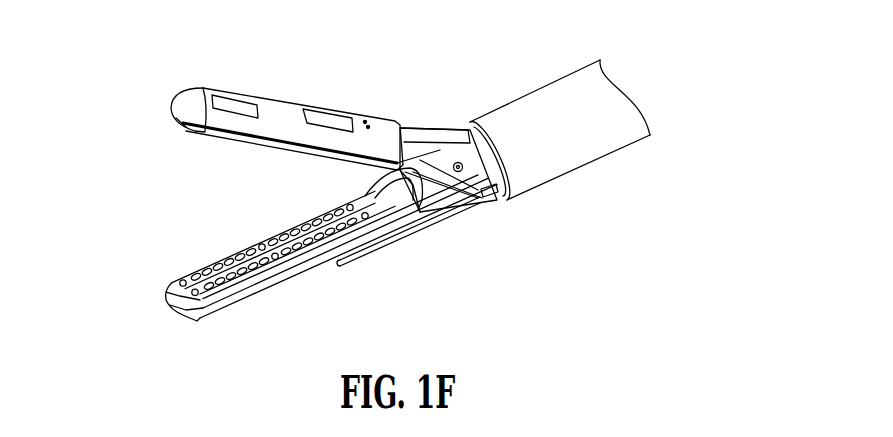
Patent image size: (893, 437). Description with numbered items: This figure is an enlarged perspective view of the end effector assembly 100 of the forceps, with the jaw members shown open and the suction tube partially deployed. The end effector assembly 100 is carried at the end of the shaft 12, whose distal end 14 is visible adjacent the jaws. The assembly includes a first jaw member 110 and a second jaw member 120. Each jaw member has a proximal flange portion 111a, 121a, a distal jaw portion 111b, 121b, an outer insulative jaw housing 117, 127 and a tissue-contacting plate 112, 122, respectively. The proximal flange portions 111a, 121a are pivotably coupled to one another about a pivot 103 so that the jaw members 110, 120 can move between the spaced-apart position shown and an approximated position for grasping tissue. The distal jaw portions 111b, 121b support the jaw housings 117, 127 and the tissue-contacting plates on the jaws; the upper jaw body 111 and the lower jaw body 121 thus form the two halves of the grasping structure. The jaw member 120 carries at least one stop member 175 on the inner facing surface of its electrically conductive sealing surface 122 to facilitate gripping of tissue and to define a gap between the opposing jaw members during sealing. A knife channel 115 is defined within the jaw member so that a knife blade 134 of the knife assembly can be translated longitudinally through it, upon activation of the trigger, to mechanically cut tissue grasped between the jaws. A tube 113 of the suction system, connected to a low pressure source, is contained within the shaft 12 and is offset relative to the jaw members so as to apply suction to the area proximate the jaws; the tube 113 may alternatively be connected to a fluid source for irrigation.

The end effector assembly 100 is at (398, 38).
The shaft 12 is at (583, 77).
The distal end of shaft 14 is at (498, 118).
The pivot 103 is at (487, 197).
The jaw member 110 is at (209, 74).
The anvil 111 is at (290, 110).
The proximal flange portion 111a is at (427, 147).
The distal jaw portion 111b is at (175, 102).
The tissue-contacting plate 112 is at (233, 143).
The outer insulative jaw housing 117 is at (267, 108).
The jaw member 120 is at (180, 338).
The channel / cartridge carrier 121 is at (223, 307).
The proximal flange portion 121a is at (433, 185).
The distal jaw portion 121b is at (203, 323).
The knife channel 115 is at (273, 243).
The tissue-contacting plate 122 is at (207, 272).
The outer insulative jaw housing 127 is at (260, 290).
The stop member 175 is at (347, 205).
The knife blade 134 is at (375, 185).
The tube 113 is at (390, 240).